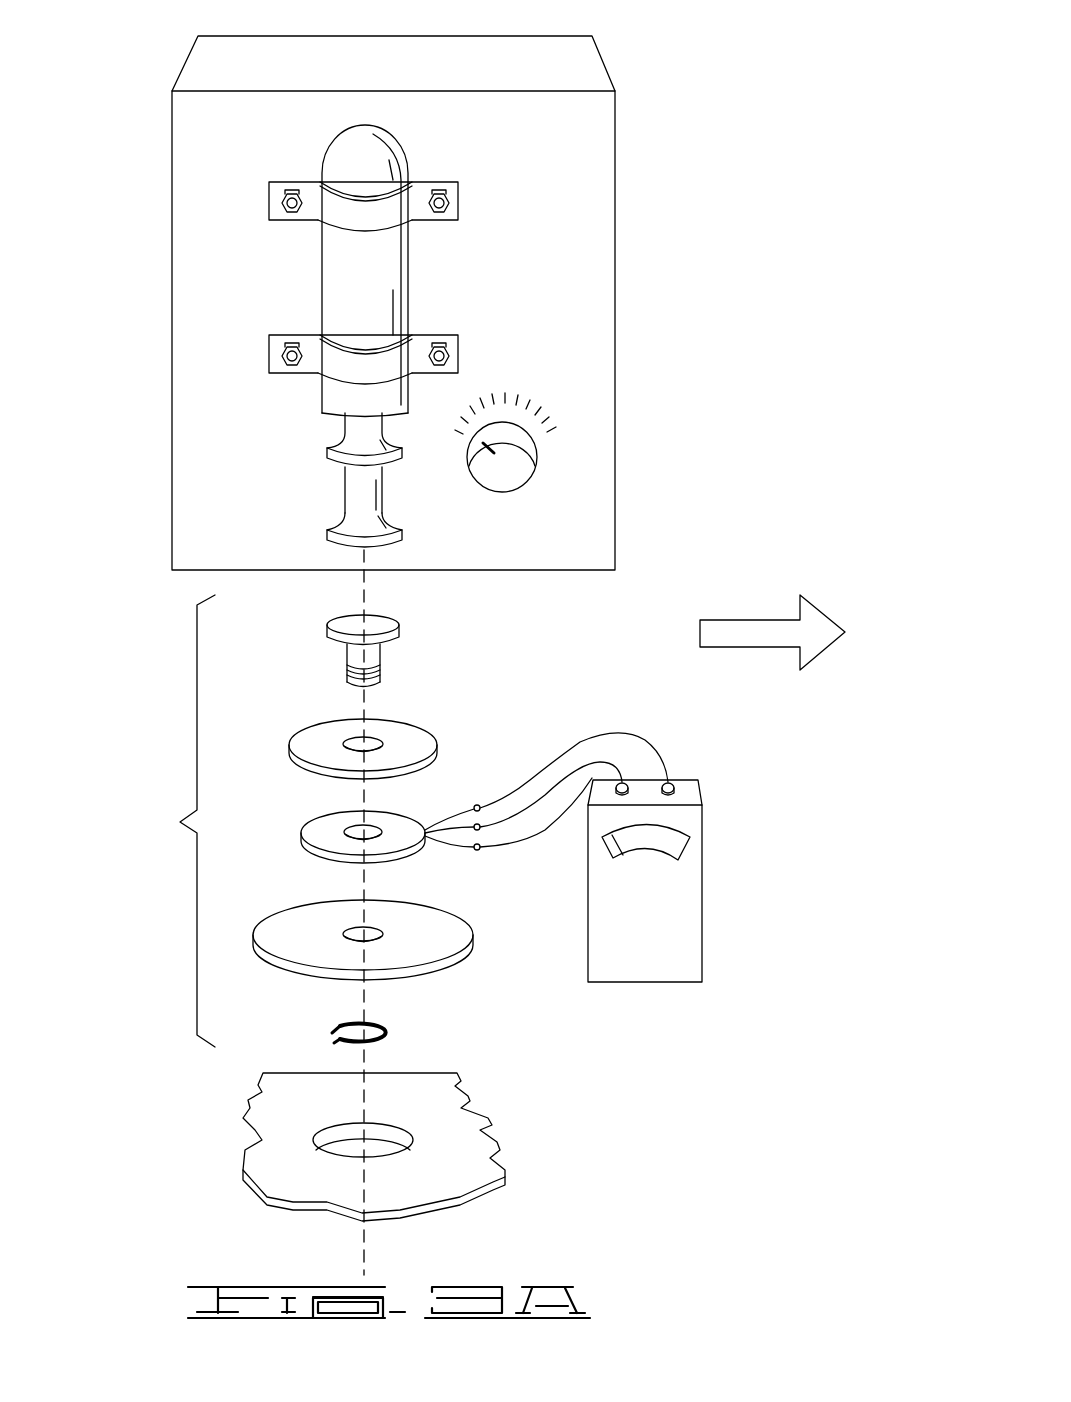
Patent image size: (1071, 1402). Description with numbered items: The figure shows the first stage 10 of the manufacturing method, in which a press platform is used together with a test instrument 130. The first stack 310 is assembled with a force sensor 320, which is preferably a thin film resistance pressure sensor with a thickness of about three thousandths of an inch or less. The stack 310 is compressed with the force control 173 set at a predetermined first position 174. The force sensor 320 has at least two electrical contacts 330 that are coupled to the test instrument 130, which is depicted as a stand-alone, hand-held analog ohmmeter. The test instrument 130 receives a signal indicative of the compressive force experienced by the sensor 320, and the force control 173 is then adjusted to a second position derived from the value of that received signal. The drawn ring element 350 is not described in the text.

The first stage 10 is at (653, 62).
The test instrument 130 is at (673, 927).
The force control 173 is at (525, 468).
The first position 174 is at (475, 400).
The first stack 310 is at (180, 822).
The force sensor 320 is at (327, 828).
The electrical contacts 330 is at (479, 850).
The retaining ring 350 is at (387, 1032).